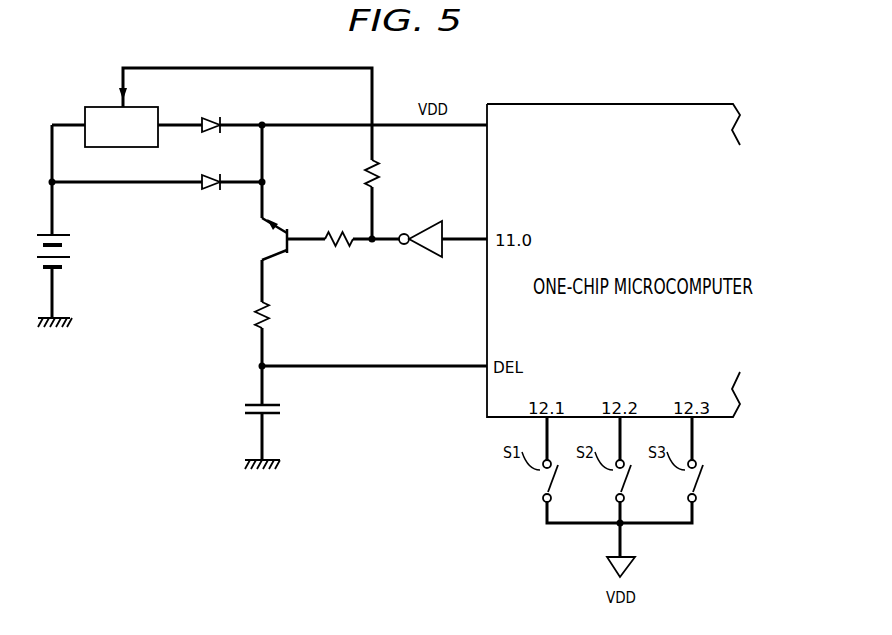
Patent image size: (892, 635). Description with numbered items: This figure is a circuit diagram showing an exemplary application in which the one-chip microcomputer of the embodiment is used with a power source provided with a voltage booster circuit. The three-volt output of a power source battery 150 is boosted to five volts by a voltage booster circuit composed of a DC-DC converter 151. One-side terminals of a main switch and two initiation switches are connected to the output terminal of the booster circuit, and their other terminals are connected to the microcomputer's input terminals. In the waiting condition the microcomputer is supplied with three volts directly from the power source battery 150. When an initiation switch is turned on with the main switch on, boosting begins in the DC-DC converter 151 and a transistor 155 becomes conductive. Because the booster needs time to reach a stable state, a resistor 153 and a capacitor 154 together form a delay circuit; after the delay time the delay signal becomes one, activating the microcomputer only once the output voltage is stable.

The power source battery 150 is at (68, 238).
The DC-DC converter 151 is at (106, 106).
The resistor 153 is at (283, 312).
The capacitor 154 is at (280, 405).
The transistor 155 is at (275, 252).